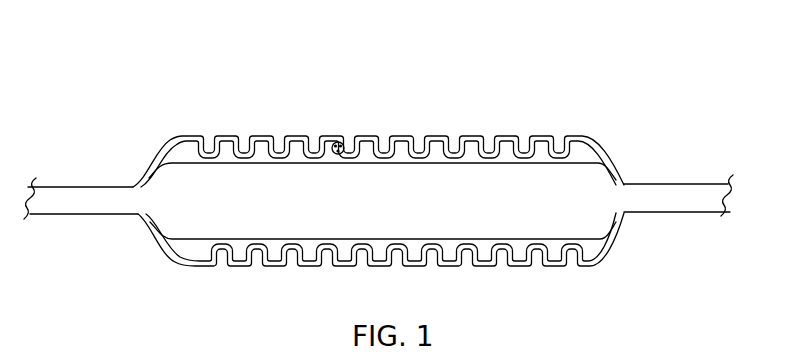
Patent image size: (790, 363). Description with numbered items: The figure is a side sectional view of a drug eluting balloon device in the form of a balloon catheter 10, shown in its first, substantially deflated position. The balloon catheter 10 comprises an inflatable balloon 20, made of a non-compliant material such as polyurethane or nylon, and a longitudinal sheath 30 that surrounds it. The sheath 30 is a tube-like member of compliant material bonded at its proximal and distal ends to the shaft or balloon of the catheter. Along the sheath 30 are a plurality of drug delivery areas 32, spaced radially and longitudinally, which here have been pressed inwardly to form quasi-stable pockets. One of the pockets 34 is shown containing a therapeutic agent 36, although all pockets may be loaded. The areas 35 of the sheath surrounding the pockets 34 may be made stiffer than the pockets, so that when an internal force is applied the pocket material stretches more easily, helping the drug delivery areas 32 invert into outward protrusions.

The balloon catheter 10 is at (212, 85).
The inflatable balloon 20 is at (203, 203).
The longitudinal sheath 30 is at (267, 136).
The drug delivery areas 32 is at (458, 128).
The pocket 34 is at (333, 126).
The surrounding areas 35 is at (317, 136).
The therapeutic agent 36 is at (342, 139).